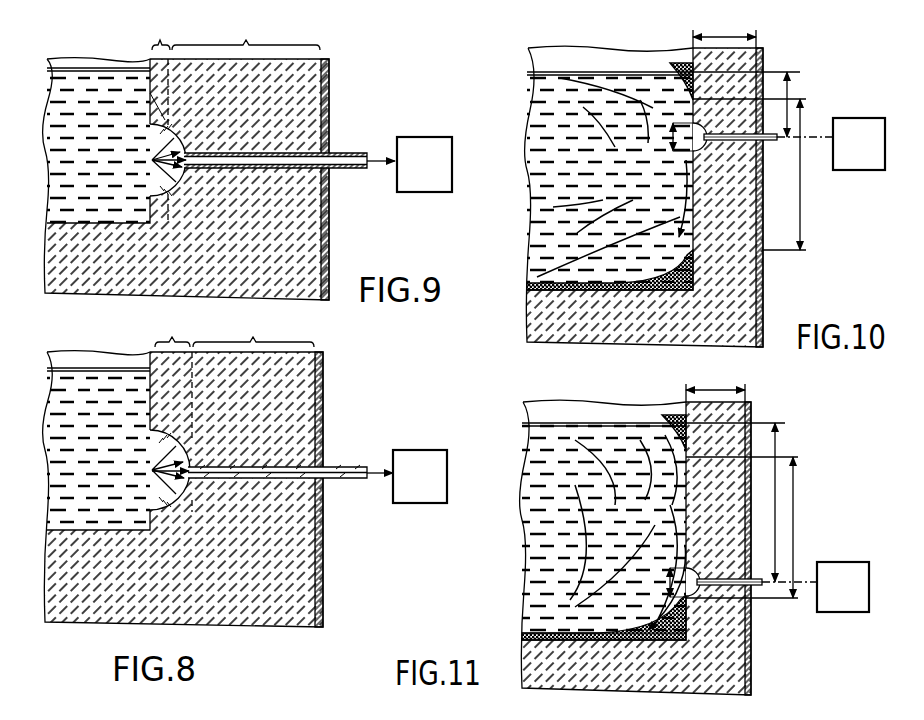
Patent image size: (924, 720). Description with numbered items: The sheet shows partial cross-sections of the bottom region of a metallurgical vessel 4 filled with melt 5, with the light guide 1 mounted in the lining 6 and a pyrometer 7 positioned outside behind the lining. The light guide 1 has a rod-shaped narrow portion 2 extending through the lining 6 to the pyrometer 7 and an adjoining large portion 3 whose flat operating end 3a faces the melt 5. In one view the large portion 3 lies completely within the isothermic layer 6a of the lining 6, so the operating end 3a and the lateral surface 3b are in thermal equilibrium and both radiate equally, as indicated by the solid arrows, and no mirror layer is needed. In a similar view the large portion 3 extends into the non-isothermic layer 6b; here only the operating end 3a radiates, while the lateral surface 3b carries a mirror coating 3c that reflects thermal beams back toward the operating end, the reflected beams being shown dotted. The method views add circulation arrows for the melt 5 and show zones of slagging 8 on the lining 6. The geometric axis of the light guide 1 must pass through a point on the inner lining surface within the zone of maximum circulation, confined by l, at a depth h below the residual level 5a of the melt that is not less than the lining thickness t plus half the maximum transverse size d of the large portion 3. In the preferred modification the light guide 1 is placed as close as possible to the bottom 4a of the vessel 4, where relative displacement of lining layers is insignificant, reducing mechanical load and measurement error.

In FIG. 9, the light guide 1 is at (341, 148).
In FIG. 8, the light guide 1 is at (345, 461).
In FIG. 10, the light guide 1 is at (766, 152).
In FIG. 11, the light guide 1 is at (756, 575).
In FIG. 9, the narrow portion 2 is at (344, 169).
In FIG. 8, the narrow portion 2 is at (277, 471).
In FIG. 10, the narrow portion 2 is at (741, 122).
In FIG. 10, the large portion 3 is at (690, 152).
In FIG. 11, the large portion 3 is at (685, 571).
In FIG. 9, the operating end 3a is at (150, 125).
In FIG. 8, the operating end 3a is at (150, 468).
In FIG. 9, the lateral surface 3b is at (148, 166).
In FIG. 8, the lateral surface 3b is at (148, 505).
In FIG. 9, the mirror coating 3c is at (150, 91).
In FIG. 9, the metallurgical vessel 4 is at (338, 93).
In FIG. 8, the metallurgical vessel 4 is at (334, 392).
In FIG. 10, the metallurgical vessel 4 is at (763, 268).
In FIG. 11, the metallurgical vessel 4 is at (752, 653).
In FIG. 11, the bottom 4a is at (543, 633).
In FIG. 9, the melt 5 is at (100, 70).
In FIG. 8, the melt 5 is at (92, 368).
In FIG. 10, the melt 5 is at (530, 240).
In FIG. 11, the melt 5 is at (527, 531).
In FIG. 10, the residual level 5a is at (530, 56).
In FIG. 11, the residual level 5a is at (528, 412).
In FIG. 9, the lining 6 is at (321, 256).
In FIG. 8, the lining 6 is at (318, 410).
In FIG. 10, the lining 6 is at (752, 338).
In FIG. 11, the lining 6 is at (747, 634).
In FIG. 9, the isothermic layer 6a is at (164, 120).
In FIG. 8, the isothermic layer 6a is at (173, 413).
In FIG. 9, the non-isothermic layer 6b is at (246, 34).
In FIG. 8, the non-isothermic layer 6b is at (253, 330).
In FIG. 9, the pyrometer 7 is at (424, 164).
In FIG. 8, the pyrometer 7 is at (420, 476).
In FIG. 10, the pyrometer 7 is at (859, 144).
In FIG. 11, the pyrometer 7 is at (843, 587).
In FIG. 10, the zones of slagging 8 is at (680, 63).
In FIG. 11, the zones of slagging 8 is at (676, 416).
In FIG. 10, the thickness of the lining t is at (724, 29).
In FIG. 11, the thickness of the lining t is at (715, 382).
In FIG. 10, the depth h is at (790, 97).
In FIG. 11, the depth h is at (742, 510).
In FIG. 10, the zone of maximum circulation l is at (807, 174).
In FIG. 11, the zone of maximum circulation l is at (801, 527).
In FIG. 10, the maximum transverse size d is at (672, 125).
In FIG. 11, the maximum transverse size d is at (670, 581).